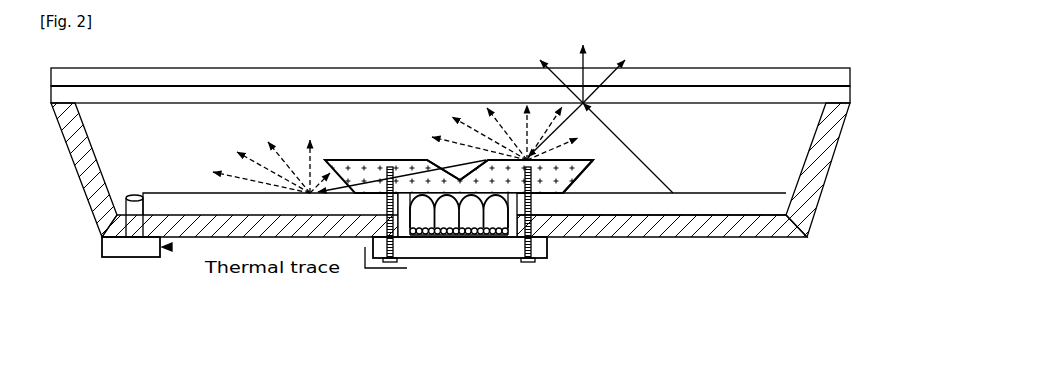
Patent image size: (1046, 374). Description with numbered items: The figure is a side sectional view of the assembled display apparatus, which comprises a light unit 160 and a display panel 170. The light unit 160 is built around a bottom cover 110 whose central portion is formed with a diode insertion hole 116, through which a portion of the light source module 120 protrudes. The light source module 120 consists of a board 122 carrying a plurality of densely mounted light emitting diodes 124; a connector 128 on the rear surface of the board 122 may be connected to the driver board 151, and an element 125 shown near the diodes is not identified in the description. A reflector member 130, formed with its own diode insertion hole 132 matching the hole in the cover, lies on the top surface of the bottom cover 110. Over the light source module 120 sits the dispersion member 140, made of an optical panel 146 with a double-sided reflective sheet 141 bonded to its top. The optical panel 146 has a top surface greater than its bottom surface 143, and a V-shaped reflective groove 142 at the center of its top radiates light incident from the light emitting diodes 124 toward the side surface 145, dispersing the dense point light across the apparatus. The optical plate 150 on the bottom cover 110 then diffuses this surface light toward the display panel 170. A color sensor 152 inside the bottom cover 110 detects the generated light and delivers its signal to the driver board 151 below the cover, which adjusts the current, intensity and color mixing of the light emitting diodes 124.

The bottom cover 110 is at (717, 225).
The diode insertion hole 116 is at (508, 248).
The light source module 120 is at (485, 262).
The board 122 is at (507, 258).
The light emitting diodes 124 is at (424, 222).
The bumps 125 is at (483, 234).
The connector 128 is at (547, 247).
The reflector member 130 is at (722, 200).
The diode insertion hole 132 is at (553, 197).
The dispersion member 140 is at (330, 145).
The reflective sheet 141 is at (357, 160).
The V-shaped reflective groove 142 is at (460, 175).
The bottom surface 143 is at (556, 194).
The side surface 145 is at (350, 200).
The optical panel 146 is at (572, 184).
The optical plate 150 is at (840, 96).
The driver board 151 is at (152, 252).
The color sensor 152 is at (134, 197).
The light unit 160 is at (838, 155).
The display panel 170 is at (840, 75).